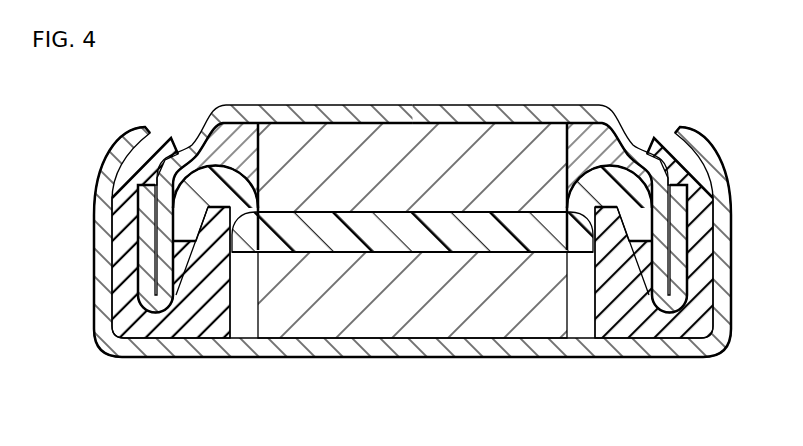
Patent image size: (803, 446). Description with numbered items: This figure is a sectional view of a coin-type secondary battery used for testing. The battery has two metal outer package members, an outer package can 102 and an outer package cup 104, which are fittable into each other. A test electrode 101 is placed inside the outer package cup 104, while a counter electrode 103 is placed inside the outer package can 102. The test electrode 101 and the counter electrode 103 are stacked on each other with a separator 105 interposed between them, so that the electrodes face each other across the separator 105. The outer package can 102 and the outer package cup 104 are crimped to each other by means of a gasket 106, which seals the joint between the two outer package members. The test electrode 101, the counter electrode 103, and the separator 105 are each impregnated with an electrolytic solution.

The test electrode 101 is at (478, 150).
The outer package can 102 is at (334, 340).
The counter electrode 103 is at (463, 324).
The outer package cup 104 is at (352, 114).
The separator 105 is at (635, 183).
The gasket 106 is at (193, 331).